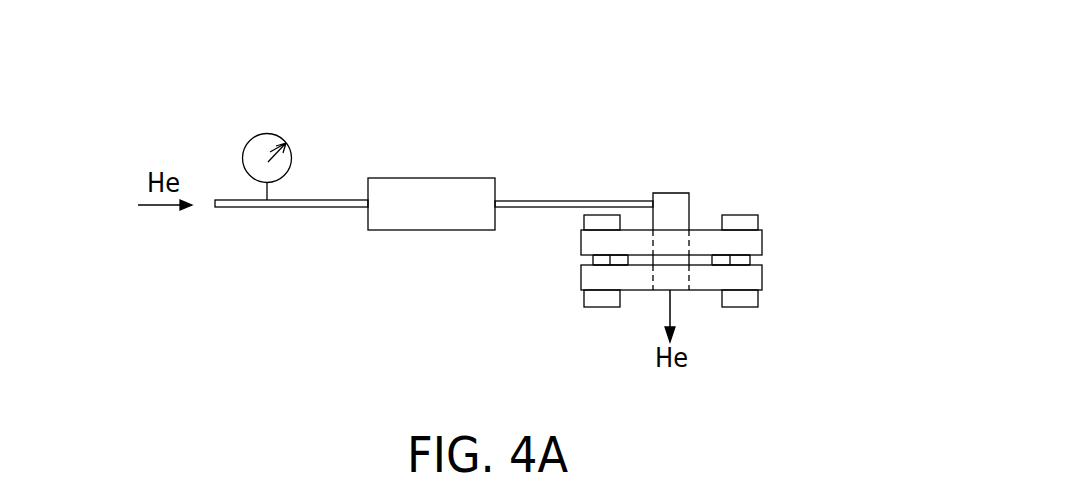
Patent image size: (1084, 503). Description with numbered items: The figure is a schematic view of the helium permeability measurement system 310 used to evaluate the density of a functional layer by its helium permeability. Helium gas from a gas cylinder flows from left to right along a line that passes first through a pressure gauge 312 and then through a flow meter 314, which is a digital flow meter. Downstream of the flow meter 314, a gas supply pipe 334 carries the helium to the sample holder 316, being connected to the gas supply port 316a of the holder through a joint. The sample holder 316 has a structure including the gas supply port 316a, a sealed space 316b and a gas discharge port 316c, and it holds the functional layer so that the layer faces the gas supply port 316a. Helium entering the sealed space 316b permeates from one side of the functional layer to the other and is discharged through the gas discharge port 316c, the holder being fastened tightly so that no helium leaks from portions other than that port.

The helium permeability measurement system 310 is at (710, 85).
The pressure gauge 312 is at (260, 135).
The flow meter 314 is at (438, 198).
The gas supply pipe 334 is at (543, 200).
The sample holder 316 is at (740, 168).
The gas supply port 316a is at (690, 243).
The sealed space 316b is at (678, 262).
The gas discharge port 316c is at (690, 277).